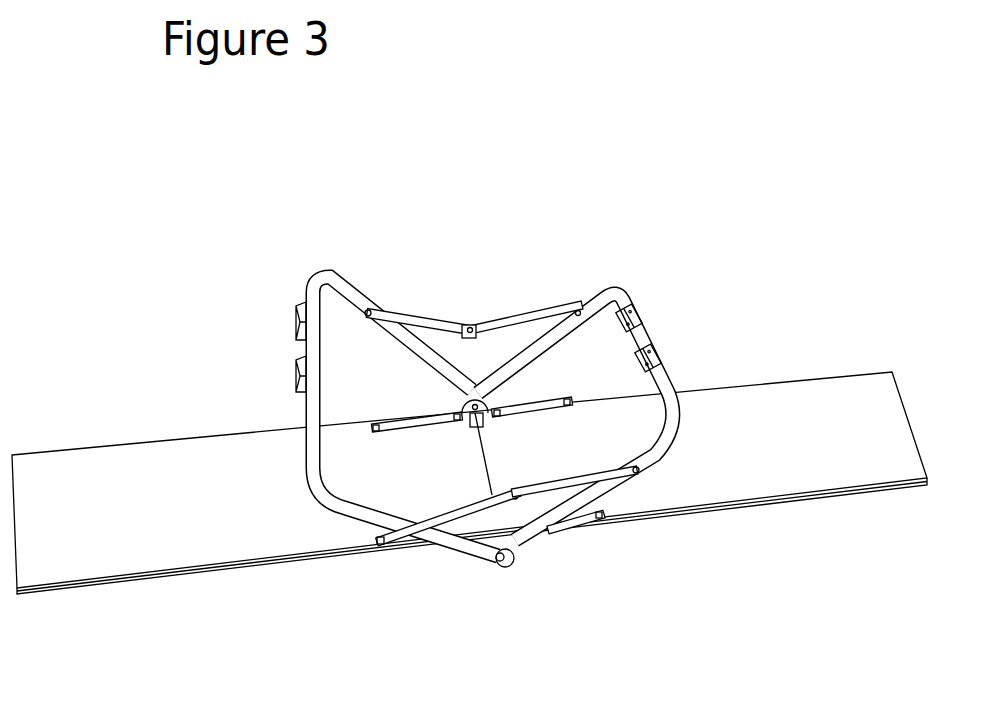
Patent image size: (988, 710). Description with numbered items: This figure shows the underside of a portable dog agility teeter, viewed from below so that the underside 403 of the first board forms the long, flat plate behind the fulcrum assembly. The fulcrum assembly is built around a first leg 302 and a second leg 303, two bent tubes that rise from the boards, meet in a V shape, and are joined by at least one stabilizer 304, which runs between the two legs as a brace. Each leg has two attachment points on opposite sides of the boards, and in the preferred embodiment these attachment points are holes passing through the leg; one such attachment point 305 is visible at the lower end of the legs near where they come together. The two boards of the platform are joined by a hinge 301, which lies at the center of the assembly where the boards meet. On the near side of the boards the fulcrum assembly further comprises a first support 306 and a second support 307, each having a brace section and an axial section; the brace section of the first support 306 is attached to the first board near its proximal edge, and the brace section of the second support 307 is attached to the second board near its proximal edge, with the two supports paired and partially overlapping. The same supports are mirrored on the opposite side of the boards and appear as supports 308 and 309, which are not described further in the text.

The hinge 301 is at (523, 547).
The first leg 302 is at (625, 282).
The second leg 303 is at (300, 280).
The stabilizer 304 is at (430, 312).
The attachment point 305 is at (497, 583).
The first support 306 is at (545, 398).
The second support 307 is at (407, 418).
The mirrored first support 308 is at (578, 528).
The mirrored second support 309 is at (397, 558).
The underside of the first board 403 is at (676, 466).